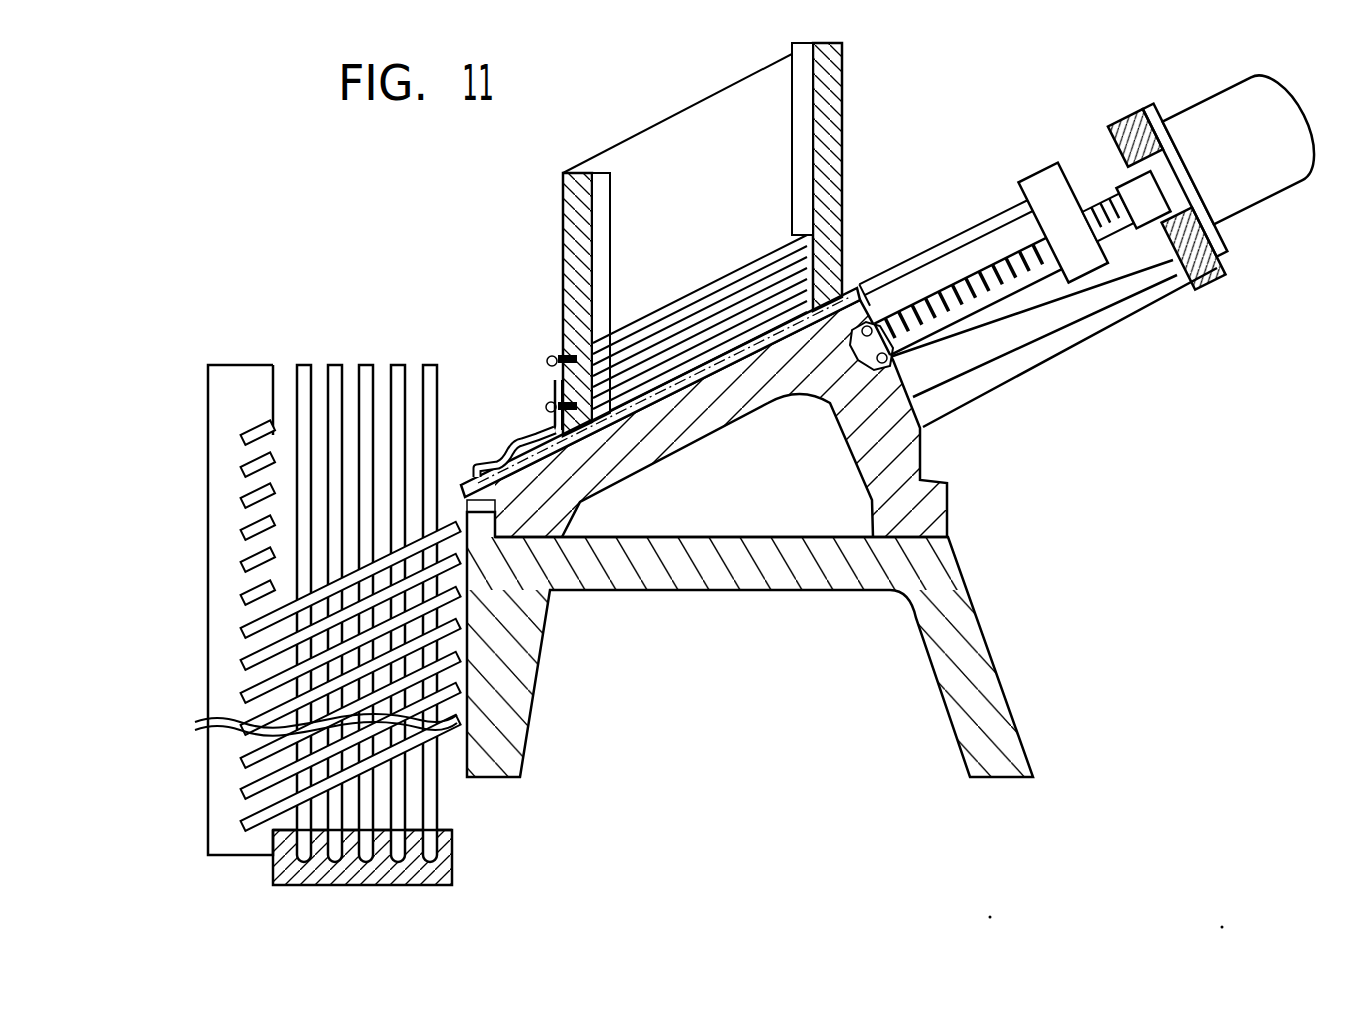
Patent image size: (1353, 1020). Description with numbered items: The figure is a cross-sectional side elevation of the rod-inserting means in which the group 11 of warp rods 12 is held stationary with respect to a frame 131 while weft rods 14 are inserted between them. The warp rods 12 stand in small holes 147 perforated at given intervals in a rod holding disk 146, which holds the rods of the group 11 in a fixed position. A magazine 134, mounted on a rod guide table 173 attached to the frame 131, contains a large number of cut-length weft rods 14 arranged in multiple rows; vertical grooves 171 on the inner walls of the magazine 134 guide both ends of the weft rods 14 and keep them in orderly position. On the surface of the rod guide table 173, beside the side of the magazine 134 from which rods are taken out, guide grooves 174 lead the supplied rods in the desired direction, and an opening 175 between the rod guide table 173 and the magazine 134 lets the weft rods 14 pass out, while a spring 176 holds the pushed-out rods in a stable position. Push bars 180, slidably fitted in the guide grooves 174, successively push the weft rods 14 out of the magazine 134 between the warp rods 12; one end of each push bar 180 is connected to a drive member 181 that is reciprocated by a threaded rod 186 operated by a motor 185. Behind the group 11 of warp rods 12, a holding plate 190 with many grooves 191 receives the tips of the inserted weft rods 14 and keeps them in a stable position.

The group of warp rods 11 is at (391, 325).
The warp rods 12 is at (430, 383).
The weft rods 14 is at (680, 305).
The frame 131 is at (962, 648).
The magazine 134 is at (875, 105).
The rod holding disk 146 is at (455, 878).
The small holes 147 is at (435, 835).
The vertical grooves 171 is at (598, 182).
The rod guide table 173 is at (757, 390).
The guide grooves 174 is at (660, 407).
The opening 175 is at (545, 428).
The spring 176 is at (503, 449).
The push bars 180 is at (930, 250).
The drive member 181 is at (1037, 175).
The motor 185 is at (1200, 108).
The threaded rod 186 is at (977, 307).
The holding plate 190 is at (243, 368).
The grooves 191 is at (257, 463).